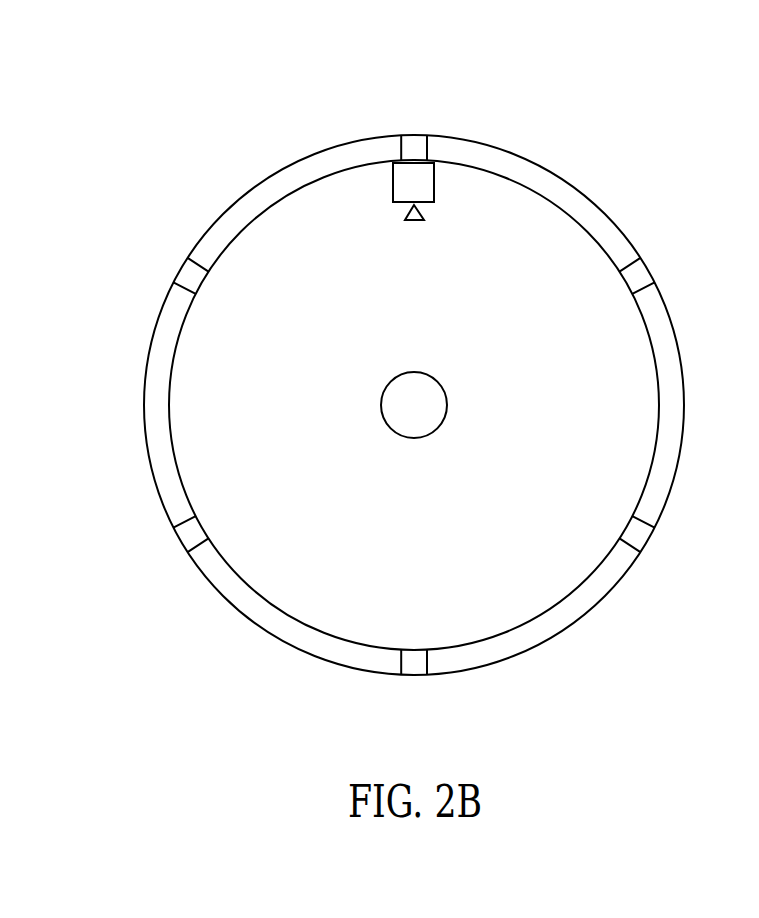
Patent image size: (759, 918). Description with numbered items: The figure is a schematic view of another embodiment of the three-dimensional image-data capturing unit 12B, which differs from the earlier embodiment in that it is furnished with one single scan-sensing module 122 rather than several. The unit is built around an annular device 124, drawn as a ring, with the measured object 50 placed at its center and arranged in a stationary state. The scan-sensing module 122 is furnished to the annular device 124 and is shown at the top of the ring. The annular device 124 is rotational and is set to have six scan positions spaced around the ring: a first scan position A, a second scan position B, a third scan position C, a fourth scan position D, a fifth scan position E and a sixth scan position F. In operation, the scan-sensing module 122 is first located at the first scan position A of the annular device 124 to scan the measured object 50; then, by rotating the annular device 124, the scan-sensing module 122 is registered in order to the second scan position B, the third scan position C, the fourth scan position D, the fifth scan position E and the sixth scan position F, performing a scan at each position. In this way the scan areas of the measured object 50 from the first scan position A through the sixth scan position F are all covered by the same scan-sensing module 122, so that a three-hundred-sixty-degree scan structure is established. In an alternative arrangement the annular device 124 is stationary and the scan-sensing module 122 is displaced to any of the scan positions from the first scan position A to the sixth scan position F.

The three-dimensional image-data capturing unit 12B is at (86, 67).
The annular device 124 is at (281, 178).
The scan-sensing module 122 is at (431, 185).
The measured object 50 is at (403, 382).
The first scan position A is at (413, 142).
The second scan position B is at (641, 272).
The third scan position C is at (641, 533).
The fourth scan position D is at (414, 668).
The fifth scan position E is at (190, 534).
The sixth scan position F is at (190, 273).